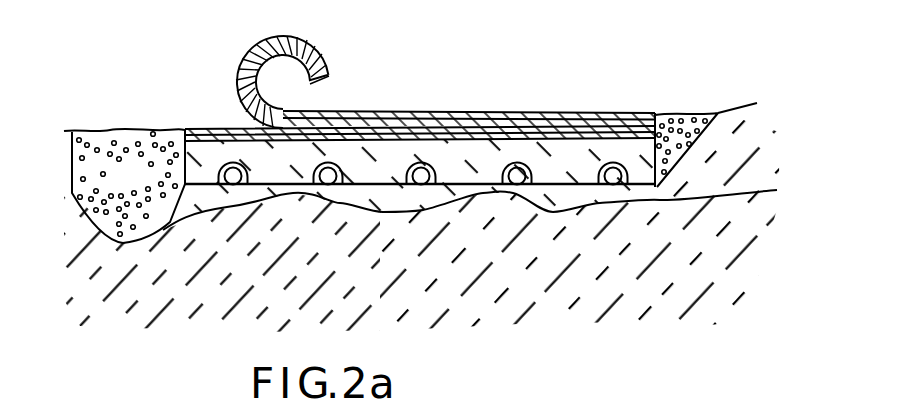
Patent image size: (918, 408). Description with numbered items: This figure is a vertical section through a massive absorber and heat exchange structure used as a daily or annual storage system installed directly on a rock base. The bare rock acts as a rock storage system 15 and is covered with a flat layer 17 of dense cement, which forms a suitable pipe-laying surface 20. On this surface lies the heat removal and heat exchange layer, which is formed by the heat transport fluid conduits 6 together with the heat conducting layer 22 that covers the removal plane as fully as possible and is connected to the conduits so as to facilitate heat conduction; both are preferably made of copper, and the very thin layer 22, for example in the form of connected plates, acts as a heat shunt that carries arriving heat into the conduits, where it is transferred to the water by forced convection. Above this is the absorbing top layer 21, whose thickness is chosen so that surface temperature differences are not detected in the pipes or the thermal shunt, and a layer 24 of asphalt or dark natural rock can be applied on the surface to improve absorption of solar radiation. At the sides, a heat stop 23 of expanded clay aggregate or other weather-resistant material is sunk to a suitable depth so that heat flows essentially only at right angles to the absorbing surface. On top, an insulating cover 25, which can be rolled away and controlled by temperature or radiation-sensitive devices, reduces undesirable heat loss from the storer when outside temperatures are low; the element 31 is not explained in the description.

The heat transport fluid conduits 6 is at (614, 168).
The rock storage system 15 is at (647, 222).
The flat layer of dense cement 17 is at (770, 190).
The pipe-laying surface 20 is at (658, 187).
The absorbing top layer 21 is at (562, 140).
The heat conducting layer 22 is at (557, 150).
The heat stop 23 is at (140, 188).
The layer of asphalt or dark natural rock 24 is at (530, 124).
The insulating cover 25 is at (444, 113).
The hook 31 is at (236, 130).